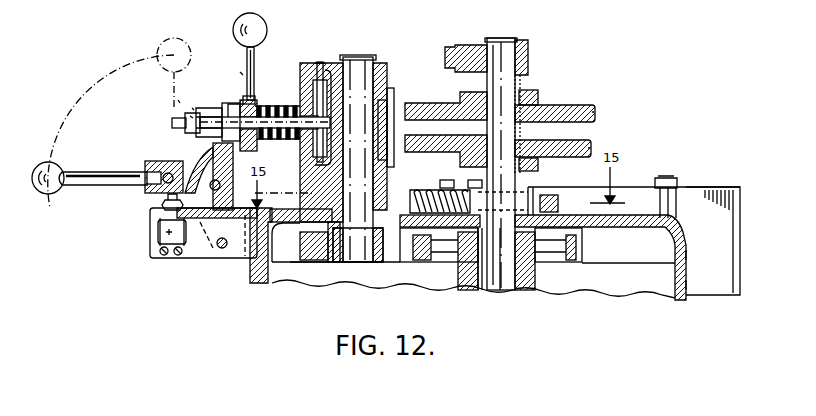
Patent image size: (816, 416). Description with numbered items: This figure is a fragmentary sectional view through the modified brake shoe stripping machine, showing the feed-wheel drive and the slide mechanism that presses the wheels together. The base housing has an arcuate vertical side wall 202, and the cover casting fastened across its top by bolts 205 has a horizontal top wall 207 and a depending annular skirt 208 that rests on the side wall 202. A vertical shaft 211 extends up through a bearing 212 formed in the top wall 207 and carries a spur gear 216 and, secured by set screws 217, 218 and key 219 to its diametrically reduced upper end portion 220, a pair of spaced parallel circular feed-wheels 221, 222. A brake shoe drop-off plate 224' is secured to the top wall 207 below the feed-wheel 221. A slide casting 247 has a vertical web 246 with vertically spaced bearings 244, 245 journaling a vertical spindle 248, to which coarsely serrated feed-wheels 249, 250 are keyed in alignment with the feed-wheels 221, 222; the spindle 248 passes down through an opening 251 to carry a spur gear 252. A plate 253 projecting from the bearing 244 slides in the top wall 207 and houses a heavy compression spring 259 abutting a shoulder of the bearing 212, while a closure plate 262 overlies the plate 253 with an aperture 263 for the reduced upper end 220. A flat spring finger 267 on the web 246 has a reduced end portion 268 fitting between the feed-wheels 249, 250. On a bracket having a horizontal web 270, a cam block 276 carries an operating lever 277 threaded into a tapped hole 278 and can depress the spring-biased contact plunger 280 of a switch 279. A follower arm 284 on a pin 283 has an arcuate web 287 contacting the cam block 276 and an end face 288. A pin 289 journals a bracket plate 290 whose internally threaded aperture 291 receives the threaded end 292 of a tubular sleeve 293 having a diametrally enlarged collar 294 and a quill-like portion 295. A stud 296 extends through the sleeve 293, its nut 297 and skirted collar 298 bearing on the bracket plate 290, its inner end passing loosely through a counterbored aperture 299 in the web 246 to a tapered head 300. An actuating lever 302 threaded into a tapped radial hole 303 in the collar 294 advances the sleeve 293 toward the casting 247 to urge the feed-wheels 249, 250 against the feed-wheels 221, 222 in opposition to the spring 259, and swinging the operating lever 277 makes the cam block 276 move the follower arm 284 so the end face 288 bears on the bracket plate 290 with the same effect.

The vertical side wall 202 is at (688, 285).
The bolts 205 is at (668, 178).
The horizontal top wall 207 is at (622, 231).
The depending annular skirt 208 is at (688, 255).
The vertical shaft 211 is at (500, 287).
The bearing 212 is at (525, 177).
The spur gear 216 is at (575, 285).
The set screw 217 is at (526, 141).
The set screw 218 is at (540, 94).
The key 219 is at (543, 108).
The diametrically reduced upper end portion 220 is at (529, 72).
The feed-wheel 221 is at (592, 141).
The feed-wheel 222 is at (594, 114).
The brake shoe drop-off plate 224' is at (722, 227).
The bearing 244 is at (328, 222).
The bearing 245 is at (387, 69).
The vertical web 246 is at (300, 114).
The slide casting 247 is at (320, 59).
The vertical spindle 248 is at (358, 56).
The coarsely serrated feed-wheel 249 is at (393, 153).
The coarsely serrated feed-wheel 250 is at (394, 96).
The opening 251 is at (408, 263).
The spur gear 252 is at (335, 263).
The plate 253 is at (560, 212).
The heavy compression spring 259 is at (473, 232).
The closure plate 262 is at (423, 183).
The aperture 263 is at (488, 204).
The flat spring finger 267 is at (298, 104).
The outer reduced end portion 268 is at (388, 123).
The horizontal web 270 is at (255, 253).
The cam block 276 is at (168, 194).
The operating lever 277 is at (99, 173).
The tapped hole 278 is at (147, 162).
The switch 279 is at (158, 236).
The spring-biased contact plunger 280 is at (165, 207).
The pin 283 is at (222, 248).
The follower arm 284 is at (183, 157).
The arcuate web 287 is at (202, 150).
The end face 288 is at (173, 123).
The pin 289 is at (215, 198).
The bracket plate 290 is at (231, 106).
The internally threaded aperture 291 is at (205, 101).
The threaded end 292 is at (245, 96).
The tubular sleeve 293 is at (242, 73).
The diametrally enlarged collar 294 is at (262, 144).
The quill-like portion 295 is at (256, 104).
The stud 296 is at (192, 116).
The nut 297 is at (194, 108).
The skirted collar 298 is at (182, 102).
The counterbored aperture 299 is at (320, 62).
The tapered head 300 is at (332, 62).
The actuating lever 302 is at (234, 31).
The tapped radial hole 303 is at (256, 47).